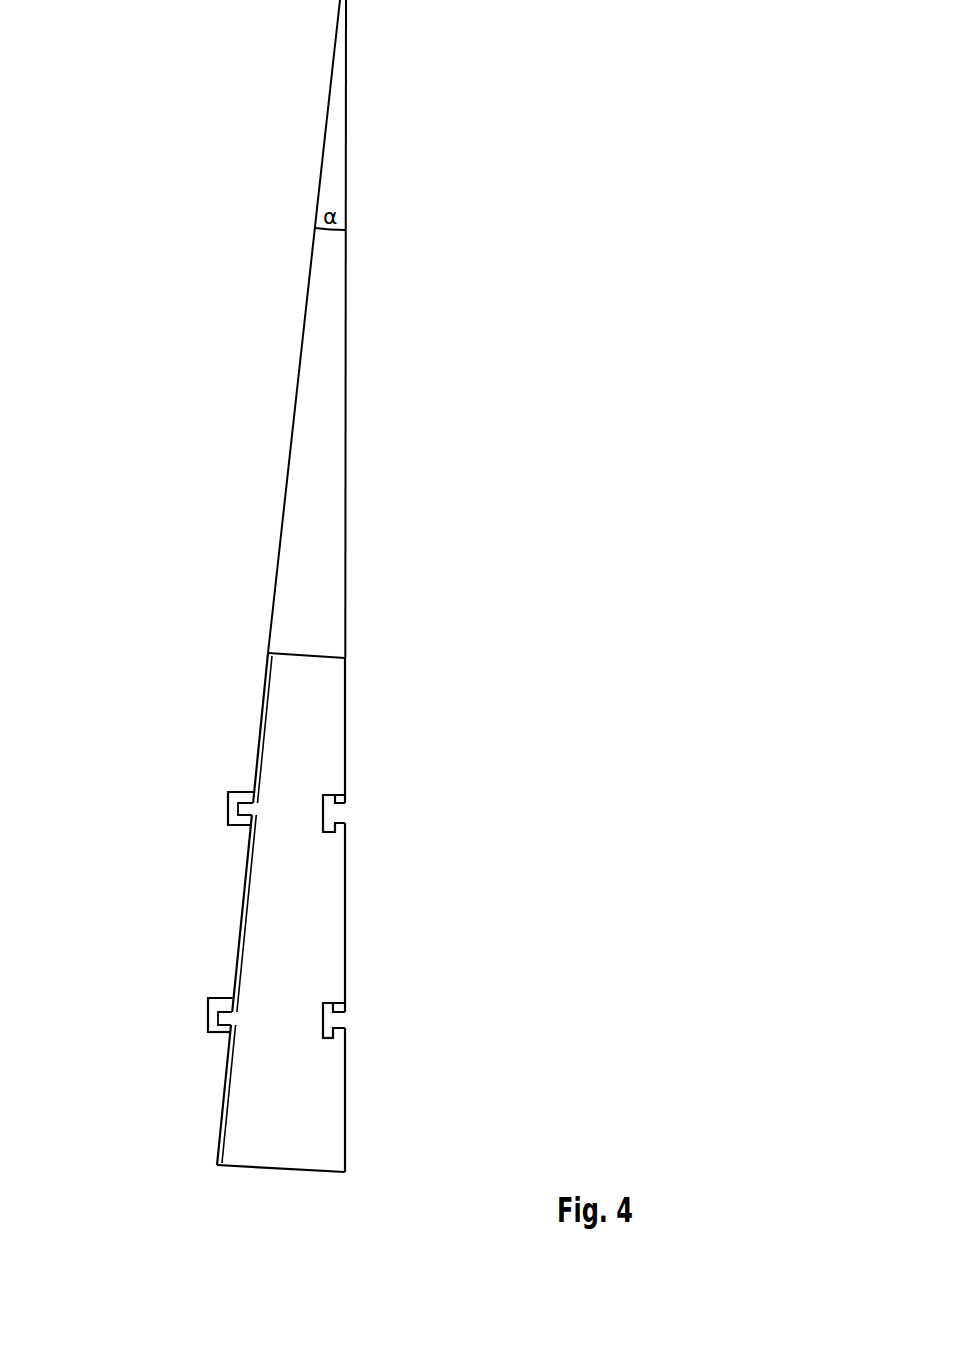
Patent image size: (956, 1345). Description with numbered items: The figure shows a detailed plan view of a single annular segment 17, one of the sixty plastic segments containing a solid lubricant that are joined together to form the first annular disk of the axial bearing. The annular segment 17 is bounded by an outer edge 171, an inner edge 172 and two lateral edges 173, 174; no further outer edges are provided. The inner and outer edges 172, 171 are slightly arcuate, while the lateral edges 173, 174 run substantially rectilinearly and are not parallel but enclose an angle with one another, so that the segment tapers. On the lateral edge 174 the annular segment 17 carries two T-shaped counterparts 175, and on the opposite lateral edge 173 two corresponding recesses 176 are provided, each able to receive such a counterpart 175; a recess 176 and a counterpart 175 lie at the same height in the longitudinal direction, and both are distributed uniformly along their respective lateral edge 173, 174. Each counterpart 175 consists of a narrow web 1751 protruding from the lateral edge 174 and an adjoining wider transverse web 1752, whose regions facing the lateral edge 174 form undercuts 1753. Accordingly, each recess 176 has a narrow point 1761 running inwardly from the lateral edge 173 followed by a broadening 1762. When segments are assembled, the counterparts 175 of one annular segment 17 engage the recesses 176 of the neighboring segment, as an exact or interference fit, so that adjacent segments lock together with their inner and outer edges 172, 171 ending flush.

The annular segment 17 is at (277, 919).
The outer edge 171 is at (272, 1170).
The inner edge 172 is at (317, 652).
The lateral edge 173 is at (345, 883).
The lateral edge 174 is at (236, 950).
The counterpart 175 is at (140, 969).
The narrow web 1751 is at (213, 1036).
The transverse web 1752 is at (218, 1030).
The undercut 1753 is at (250, 793).
The recess 176 is at (425, 918).
The narrow point 1761 is at (345, 1015).
The broadening 1762 is at (327, 1038).